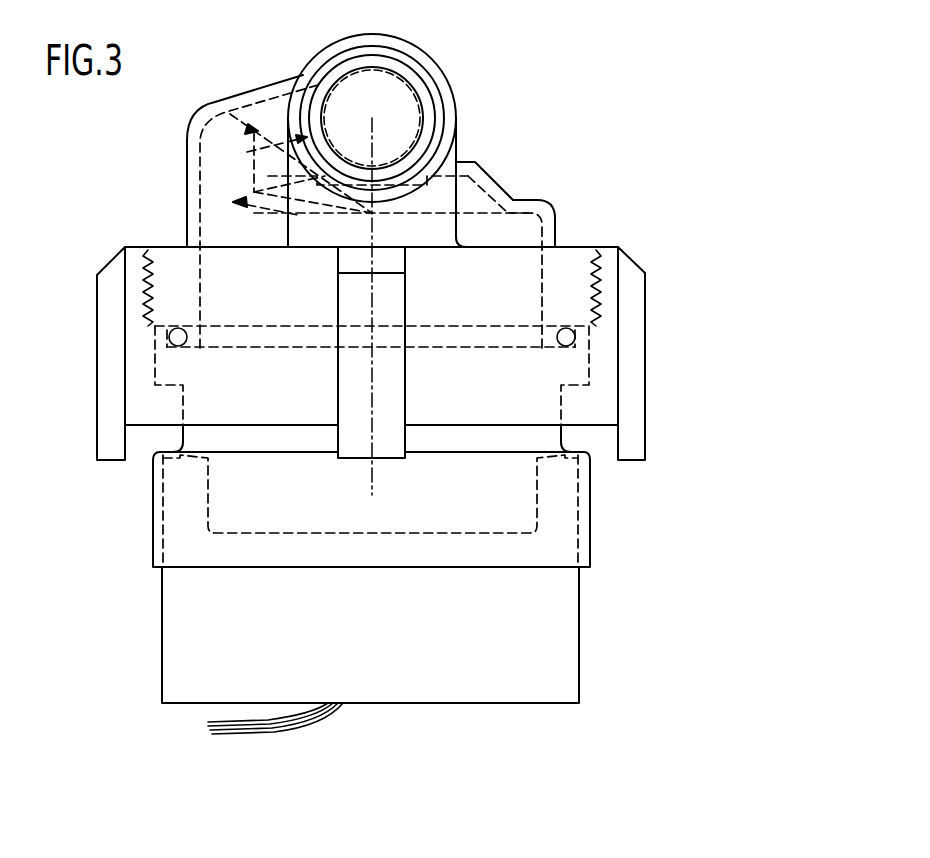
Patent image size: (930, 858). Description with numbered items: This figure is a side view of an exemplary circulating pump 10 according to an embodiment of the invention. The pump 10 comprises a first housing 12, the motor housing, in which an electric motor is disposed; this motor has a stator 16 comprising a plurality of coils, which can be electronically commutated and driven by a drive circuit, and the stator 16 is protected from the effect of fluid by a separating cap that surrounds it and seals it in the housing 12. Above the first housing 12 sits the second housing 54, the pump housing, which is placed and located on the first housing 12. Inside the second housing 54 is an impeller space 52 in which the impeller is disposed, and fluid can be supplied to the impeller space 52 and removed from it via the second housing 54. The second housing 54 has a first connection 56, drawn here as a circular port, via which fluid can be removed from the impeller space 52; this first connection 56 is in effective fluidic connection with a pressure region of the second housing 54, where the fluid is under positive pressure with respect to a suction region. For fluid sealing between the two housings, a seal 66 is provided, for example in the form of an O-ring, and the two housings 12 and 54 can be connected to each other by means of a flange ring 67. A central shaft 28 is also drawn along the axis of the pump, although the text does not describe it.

The circulating pump 10 is at (393, 371).
The first housing 12 is at (565, 628).
The stator 16 is at (237, 494).
The shaft 28 is at (372, 401).
The impeller space 52 is at (215, 280).
The second housing 54 is at (503, 197).
The first connection 56 is at (360, 91).
The seal 66 is at (176, 344).
The flange ring 67 is at (640, 318).